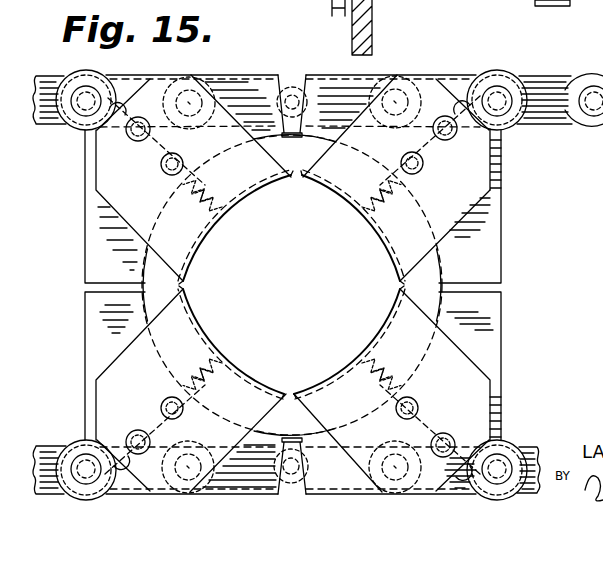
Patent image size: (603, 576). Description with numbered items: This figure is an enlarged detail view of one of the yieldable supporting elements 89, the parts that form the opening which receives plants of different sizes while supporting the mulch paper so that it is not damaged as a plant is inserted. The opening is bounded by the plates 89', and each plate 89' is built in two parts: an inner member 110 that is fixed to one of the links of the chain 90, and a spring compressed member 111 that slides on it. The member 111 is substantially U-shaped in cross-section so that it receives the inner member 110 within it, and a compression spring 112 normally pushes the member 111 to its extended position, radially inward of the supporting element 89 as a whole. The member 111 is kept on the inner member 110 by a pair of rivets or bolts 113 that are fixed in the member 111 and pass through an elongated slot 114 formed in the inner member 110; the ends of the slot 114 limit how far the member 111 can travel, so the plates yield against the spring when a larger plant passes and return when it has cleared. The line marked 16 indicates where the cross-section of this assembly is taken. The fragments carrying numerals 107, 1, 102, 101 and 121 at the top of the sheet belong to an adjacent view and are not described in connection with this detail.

The section line 16 is at (238, 307).
The supporting element 89 is at (546, 161).
The plate 89' is at (304, 284).
The chain 90 is at (537, 82).
The inner member 110 is at (100, 264).
The spring compressed member 111 is at (330, 174).
The compression spring 112 is at (228, 214).
The rivets or bolts 113 is at (136, 180).
The elongated slot 114 is at (167, 139).
The fragment of adjacent figure 107 is at (330, 14).
The fragment of adjacent figure 1 is at (352, 38).
The fragment of adjacent figure 102 is at (400, 0).
The fragment of adjacent figure 101 is at (448, 0).
The fragment of adjacent figure 121 is at (533, 0).